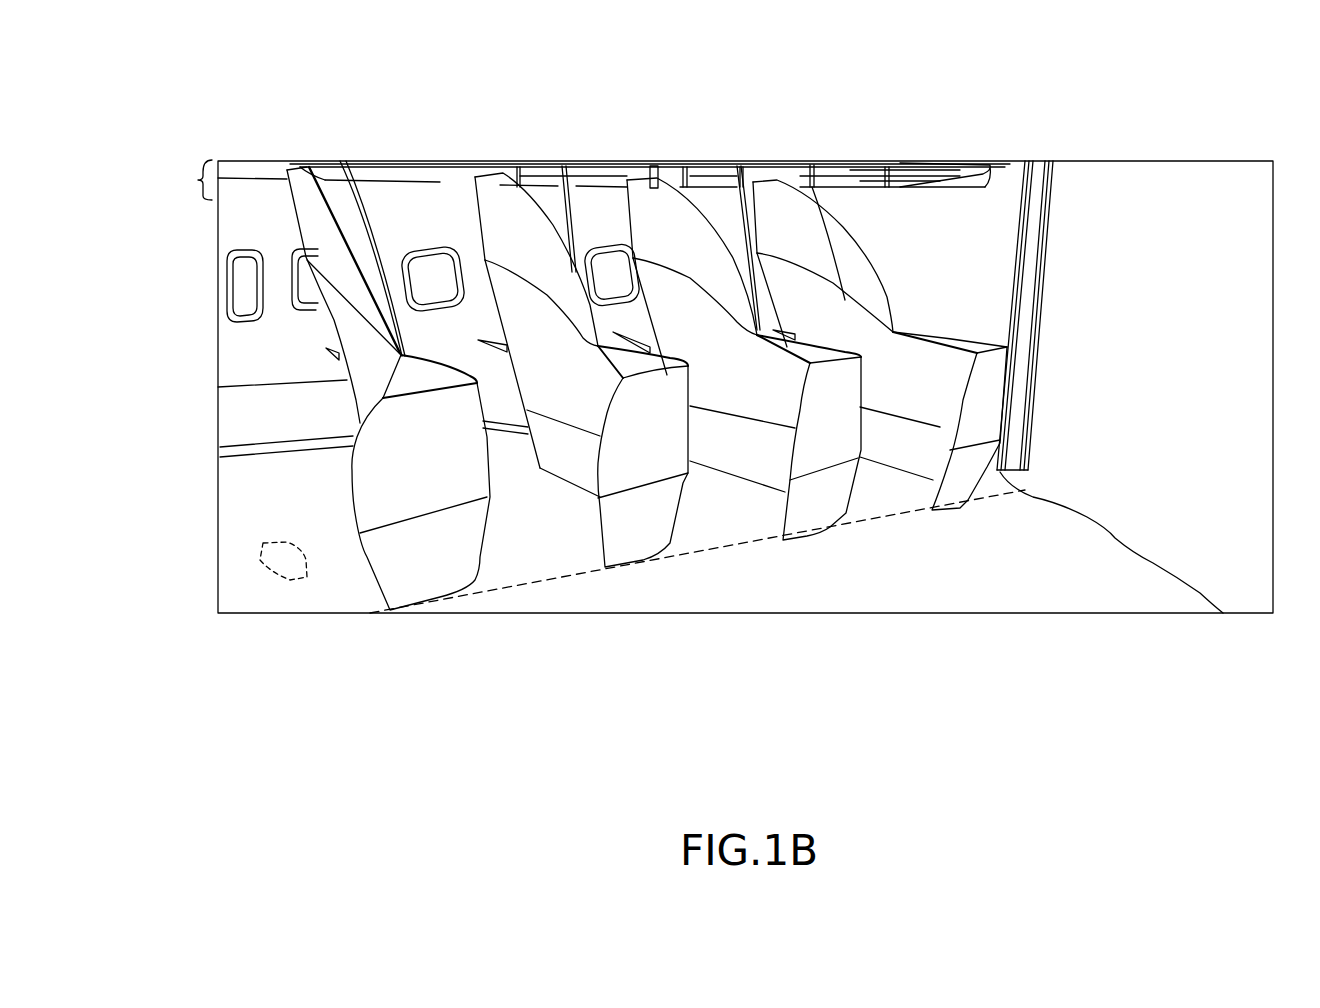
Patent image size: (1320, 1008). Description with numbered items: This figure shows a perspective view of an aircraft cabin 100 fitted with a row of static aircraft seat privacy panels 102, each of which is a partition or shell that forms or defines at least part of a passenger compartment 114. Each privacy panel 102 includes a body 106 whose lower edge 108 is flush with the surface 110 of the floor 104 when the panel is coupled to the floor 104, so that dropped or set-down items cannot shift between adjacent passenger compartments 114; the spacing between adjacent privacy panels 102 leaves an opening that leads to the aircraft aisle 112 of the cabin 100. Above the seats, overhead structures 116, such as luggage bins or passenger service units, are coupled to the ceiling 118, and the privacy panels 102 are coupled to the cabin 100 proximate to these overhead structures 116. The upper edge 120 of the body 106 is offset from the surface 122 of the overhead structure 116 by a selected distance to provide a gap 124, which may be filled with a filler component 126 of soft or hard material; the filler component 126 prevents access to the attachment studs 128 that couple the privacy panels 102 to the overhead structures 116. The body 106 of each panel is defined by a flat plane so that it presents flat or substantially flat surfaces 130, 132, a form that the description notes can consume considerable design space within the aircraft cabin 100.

The aircraft cabin 100 is at (213, 96).
The static aircraft seat privacy panel 102 is at (389, 678).
The floor 104 is at (335, 586).
The body 106 is at (618, 416).
The lower edge 108 is at (805, 540).
The surface 110 is at (903, 509).
The aircraft aisle 112 is at (1040, 600).
The passenger compartment 114 is at (418, 137).
The overhead structure 116 is at (893, 190).
The ceiling 118 is at (1060, 180).
The upper edge 120 is at (652, 165).
The surface 122 is at (855, 185).
The gap 124 is at (584, 180).
The filler component 126 is at (265, 560).
The attachment stud 128 is at (813, 164).
The surface 130 is at (588, 483).
The surface 132 is at (683, 500).